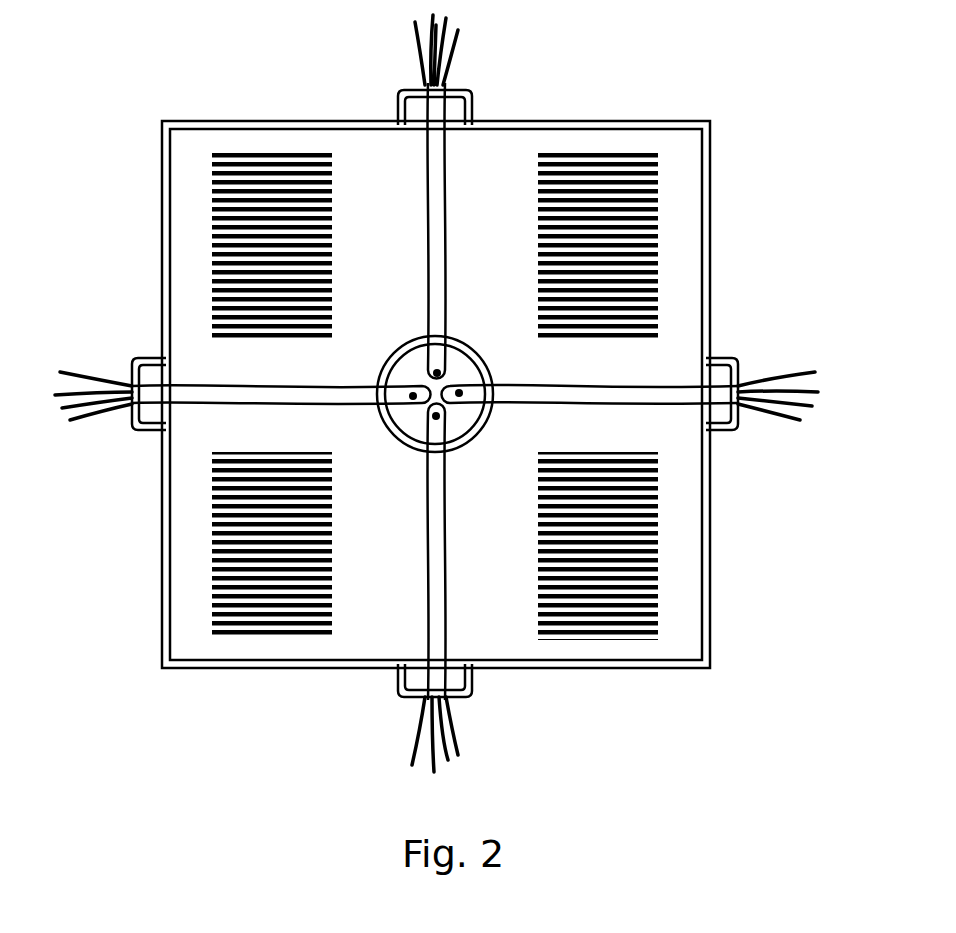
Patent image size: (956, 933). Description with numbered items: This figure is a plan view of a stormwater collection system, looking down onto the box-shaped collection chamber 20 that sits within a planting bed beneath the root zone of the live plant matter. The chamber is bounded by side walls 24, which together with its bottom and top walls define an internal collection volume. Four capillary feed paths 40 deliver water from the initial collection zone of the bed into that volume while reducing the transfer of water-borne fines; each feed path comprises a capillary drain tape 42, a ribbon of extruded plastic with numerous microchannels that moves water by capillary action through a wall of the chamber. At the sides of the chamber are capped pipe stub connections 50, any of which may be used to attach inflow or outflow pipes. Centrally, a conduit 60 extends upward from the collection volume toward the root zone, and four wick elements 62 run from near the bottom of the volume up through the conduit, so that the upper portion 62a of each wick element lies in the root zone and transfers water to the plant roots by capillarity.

The collection chamber 20 is at (723, 213).
The side walls 24 is at (620, 121).
The capillary feed paths 40 is at (441, 379).
The capillary drain tape 42 is at (265, 151).
The capped pipe stub connections 50 is at (478, 90).
The conduit 60 is at (371, 293).
The wick element 62 is at (462, 391).
The upper portion of the wick element 62a is at (441, 236).